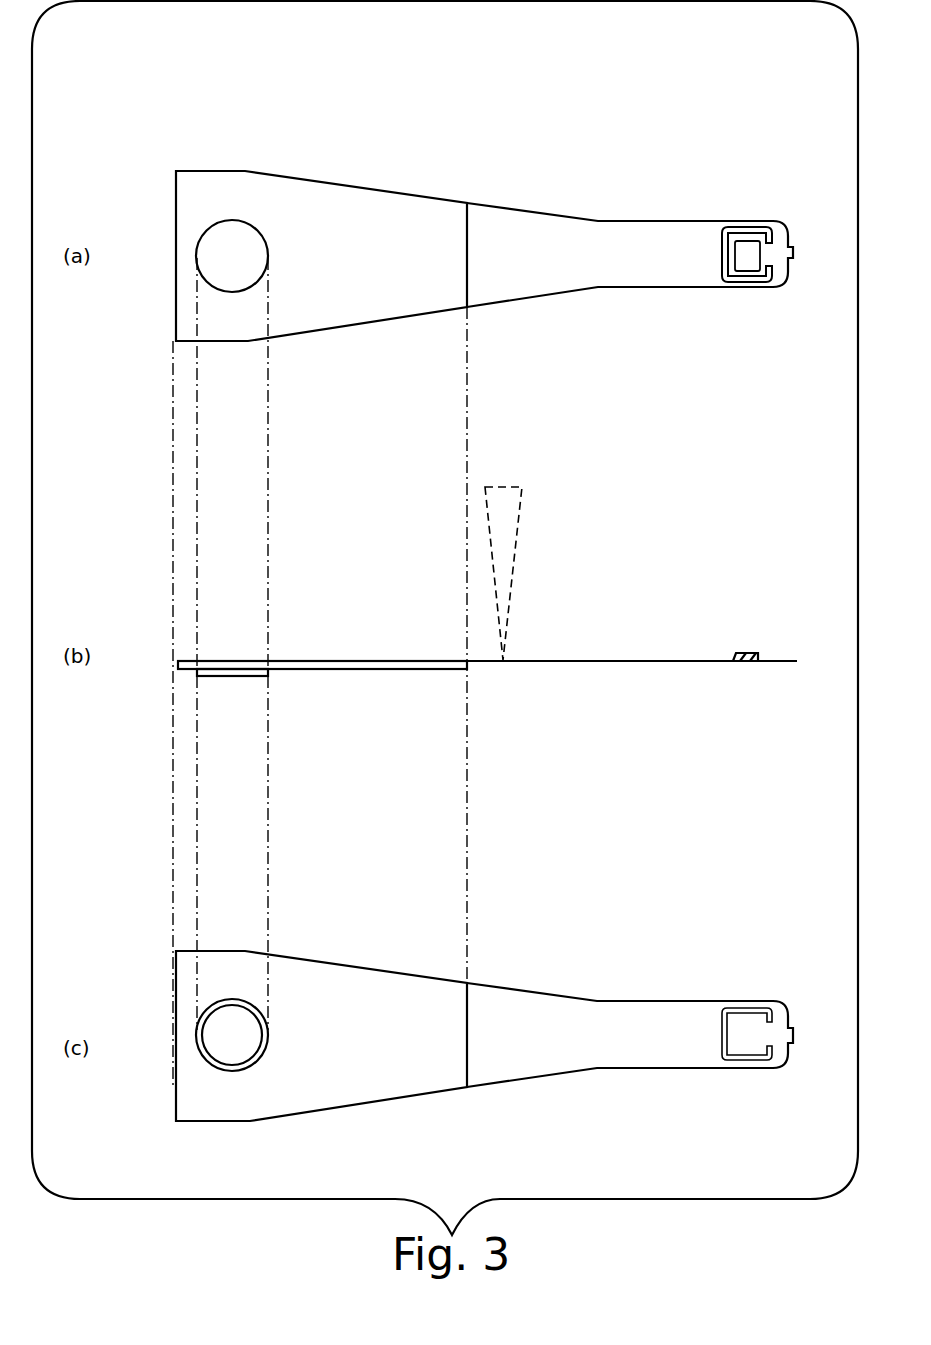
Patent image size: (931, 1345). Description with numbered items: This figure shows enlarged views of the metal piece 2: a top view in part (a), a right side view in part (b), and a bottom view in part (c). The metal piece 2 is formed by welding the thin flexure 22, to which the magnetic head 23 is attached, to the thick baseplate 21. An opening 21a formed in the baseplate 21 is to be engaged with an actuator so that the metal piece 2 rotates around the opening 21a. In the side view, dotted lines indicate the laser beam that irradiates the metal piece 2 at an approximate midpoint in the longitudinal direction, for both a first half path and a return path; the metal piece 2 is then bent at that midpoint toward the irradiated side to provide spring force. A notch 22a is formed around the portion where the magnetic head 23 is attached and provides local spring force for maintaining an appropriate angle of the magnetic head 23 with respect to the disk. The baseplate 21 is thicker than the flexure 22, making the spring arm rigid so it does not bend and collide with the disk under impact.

The metal piece 2 is at (572, 112).
The baseplate 21 is at (388, 222).
The opening 21a is at (232, 232).
The flexure 22 is at (661, 253).
The notch 22a is at (745, 216).
The magnetic head 23 is at (745, 256).